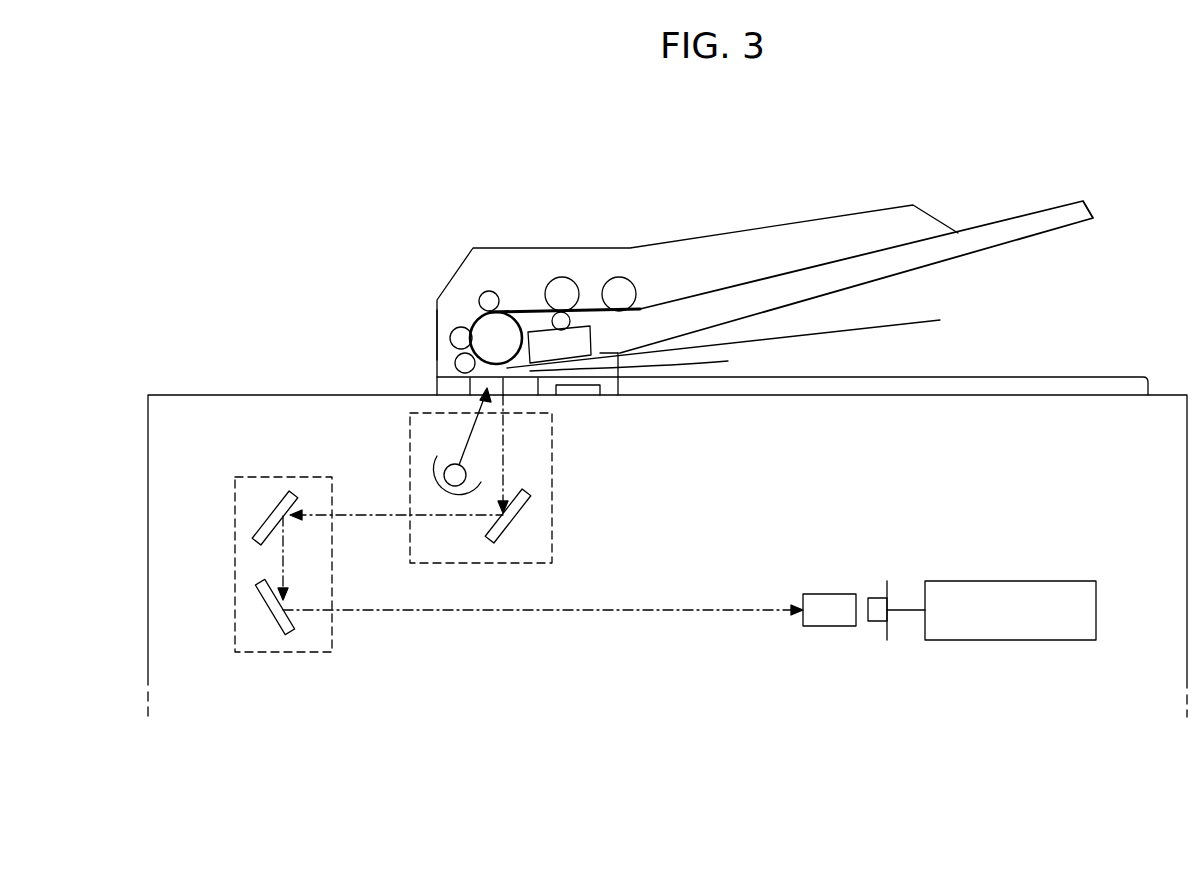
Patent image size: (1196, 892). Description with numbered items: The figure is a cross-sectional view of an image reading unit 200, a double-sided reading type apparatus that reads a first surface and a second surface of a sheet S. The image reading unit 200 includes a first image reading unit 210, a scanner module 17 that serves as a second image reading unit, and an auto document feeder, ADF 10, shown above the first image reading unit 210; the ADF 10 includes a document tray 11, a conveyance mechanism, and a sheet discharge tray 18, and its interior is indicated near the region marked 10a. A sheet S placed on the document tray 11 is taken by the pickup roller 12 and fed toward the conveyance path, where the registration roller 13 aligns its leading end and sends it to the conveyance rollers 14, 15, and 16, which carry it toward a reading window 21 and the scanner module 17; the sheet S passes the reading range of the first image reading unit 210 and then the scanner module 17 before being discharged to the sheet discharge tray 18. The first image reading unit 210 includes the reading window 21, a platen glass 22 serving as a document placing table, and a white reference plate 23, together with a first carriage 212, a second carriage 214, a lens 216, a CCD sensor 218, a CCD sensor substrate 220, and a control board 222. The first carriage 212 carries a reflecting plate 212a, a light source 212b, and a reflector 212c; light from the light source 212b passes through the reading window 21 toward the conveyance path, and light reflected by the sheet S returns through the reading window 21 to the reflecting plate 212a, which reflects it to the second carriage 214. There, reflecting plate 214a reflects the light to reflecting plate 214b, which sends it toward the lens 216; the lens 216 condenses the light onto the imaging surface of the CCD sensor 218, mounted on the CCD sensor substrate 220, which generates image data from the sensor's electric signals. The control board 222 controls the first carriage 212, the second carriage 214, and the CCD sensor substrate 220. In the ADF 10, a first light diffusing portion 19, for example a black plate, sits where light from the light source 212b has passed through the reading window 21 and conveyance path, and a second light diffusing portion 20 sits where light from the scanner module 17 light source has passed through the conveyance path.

The auto document feeder 10 is at (556, 128).
The opening 10a is at (462, 302).
The document tray 11 is at (817, 270).
The pickup roller 12 is at (619, 277).
The registration roller 13 is at (563, 277).
The conveyance roller 14 is at (491, 291).
The conveyance roller 15 is at (450, 338).
The conveyance roller 16 is at (455, 364).
The scanner module 17 is at (592, 335).
The sheet discharge tray 18 is at (890, 322).
The first light diffusing portion 19 is at (517, 313).
The second light diffusing portion 20 is at (650, 359).
The reading window 21 is at (518, 387).
The platen glass 22 is at (1054, 378).
The white reference plate 23 is at (580, 396).
The sheet S is at (680, 300).
The image reading unit 200 is at (950, 68).
The first image reading unit 210 is at (188, 362).
The first carriage 212 is at (554, 514).
The reflecting plate 212a is at (504, 540).
The light source 212b is at (438, 452).
The reflector 212c is at (442, 480).
The second carriage 214 is at (280, 477).
The reflecting plate 214a is at (266, 512).
The reflecting plate 214b is at (264, 616).
The lens 216 is at (820, 594).
The CCD sensor 218 is at (874, 598).
The CCD sensor substrate 220 is at (880, 641).
The control board 222 is at (1010, 581).